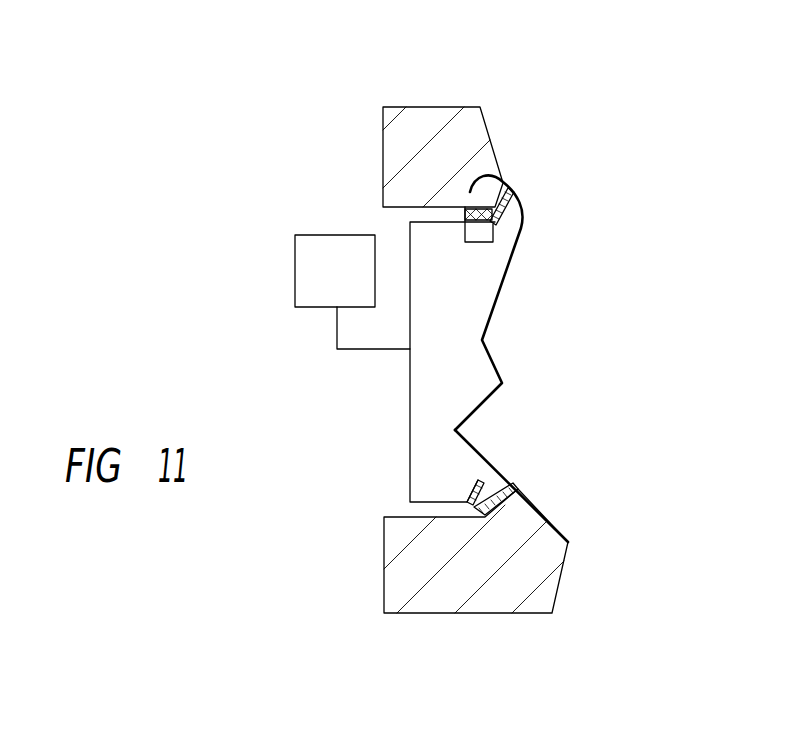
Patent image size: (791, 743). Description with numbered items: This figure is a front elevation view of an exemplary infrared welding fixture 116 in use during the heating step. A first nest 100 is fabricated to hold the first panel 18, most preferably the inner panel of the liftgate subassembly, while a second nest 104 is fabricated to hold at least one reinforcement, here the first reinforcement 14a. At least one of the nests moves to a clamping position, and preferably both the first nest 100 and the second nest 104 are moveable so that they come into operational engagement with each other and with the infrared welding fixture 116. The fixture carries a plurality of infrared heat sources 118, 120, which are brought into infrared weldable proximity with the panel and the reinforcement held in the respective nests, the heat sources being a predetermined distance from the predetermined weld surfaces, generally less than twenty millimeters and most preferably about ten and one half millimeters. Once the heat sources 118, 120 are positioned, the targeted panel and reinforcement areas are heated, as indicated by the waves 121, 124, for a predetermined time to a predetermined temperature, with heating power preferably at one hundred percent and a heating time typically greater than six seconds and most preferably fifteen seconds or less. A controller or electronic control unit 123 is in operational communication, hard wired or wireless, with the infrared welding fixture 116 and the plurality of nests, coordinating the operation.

The second nest 104 is at (432, 127).
The first reinforcement 14a is at (468, 197).
The waves 124 is at (502, 192).
The infrared welding fixture 116 is at (398, 240).
The controller or electronic control unit 123 is at (295, 280).
The infrared heat source 118 is at (488, 225).
The first panel 18 is at (472, 505).
The waves 121 is at (486, 478).
The infrared heat source 120 is at (477, 490).
The first nest 100 is at (422, 563).